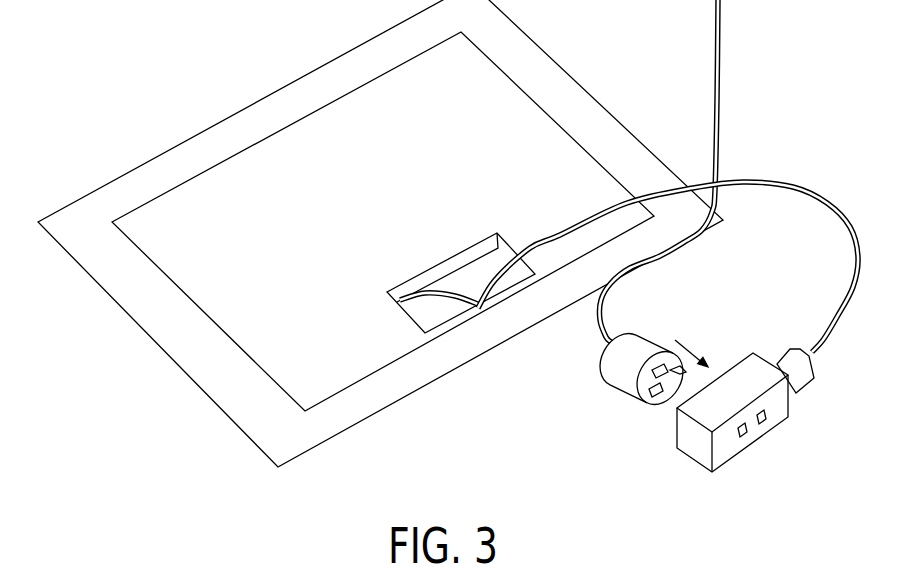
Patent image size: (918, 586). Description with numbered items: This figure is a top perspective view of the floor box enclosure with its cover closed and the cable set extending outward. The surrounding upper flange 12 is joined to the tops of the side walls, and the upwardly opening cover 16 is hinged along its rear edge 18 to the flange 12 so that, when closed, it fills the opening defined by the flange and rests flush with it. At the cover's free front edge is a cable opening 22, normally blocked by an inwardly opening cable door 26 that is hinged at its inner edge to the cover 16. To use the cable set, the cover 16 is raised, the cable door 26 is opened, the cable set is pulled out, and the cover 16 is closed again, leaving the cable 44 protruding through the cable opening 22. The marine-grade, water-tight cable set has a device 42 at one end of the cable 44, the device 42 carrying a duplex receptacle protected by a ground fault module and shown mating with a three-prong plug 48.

The upper flange 12 is at (380, 233).
The cover 16 is at (203, 283).
The rear edge 18 is at (242, 152).
The cable opening 22 is at (430, 330).
The cable door 26 is at (425, 293).
The cable 44 is at (853, 263).
The three-prong plug 48 is at (622, 387).
The device 42 is at (737, 453).